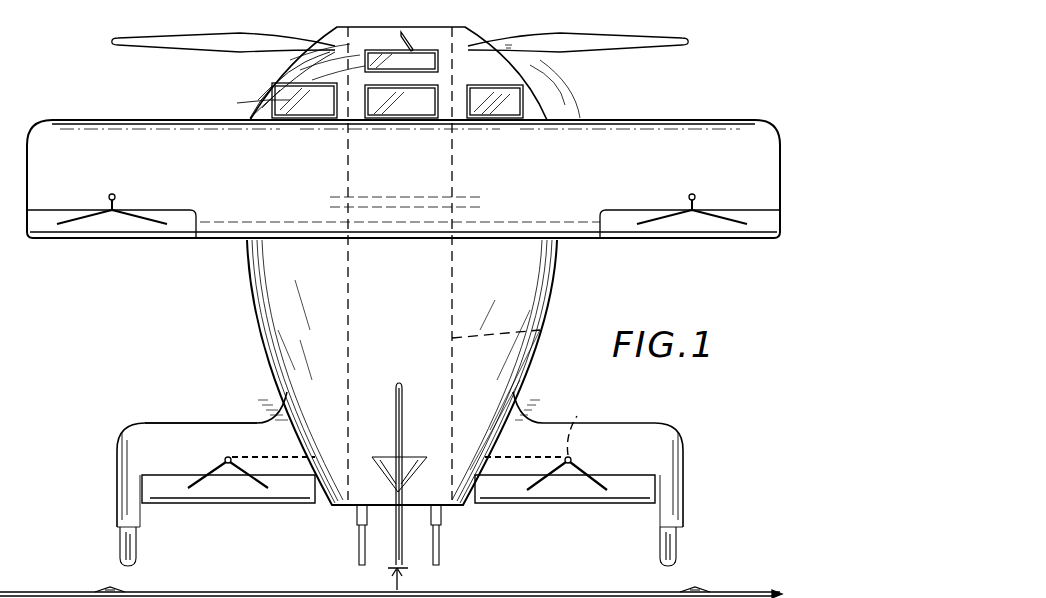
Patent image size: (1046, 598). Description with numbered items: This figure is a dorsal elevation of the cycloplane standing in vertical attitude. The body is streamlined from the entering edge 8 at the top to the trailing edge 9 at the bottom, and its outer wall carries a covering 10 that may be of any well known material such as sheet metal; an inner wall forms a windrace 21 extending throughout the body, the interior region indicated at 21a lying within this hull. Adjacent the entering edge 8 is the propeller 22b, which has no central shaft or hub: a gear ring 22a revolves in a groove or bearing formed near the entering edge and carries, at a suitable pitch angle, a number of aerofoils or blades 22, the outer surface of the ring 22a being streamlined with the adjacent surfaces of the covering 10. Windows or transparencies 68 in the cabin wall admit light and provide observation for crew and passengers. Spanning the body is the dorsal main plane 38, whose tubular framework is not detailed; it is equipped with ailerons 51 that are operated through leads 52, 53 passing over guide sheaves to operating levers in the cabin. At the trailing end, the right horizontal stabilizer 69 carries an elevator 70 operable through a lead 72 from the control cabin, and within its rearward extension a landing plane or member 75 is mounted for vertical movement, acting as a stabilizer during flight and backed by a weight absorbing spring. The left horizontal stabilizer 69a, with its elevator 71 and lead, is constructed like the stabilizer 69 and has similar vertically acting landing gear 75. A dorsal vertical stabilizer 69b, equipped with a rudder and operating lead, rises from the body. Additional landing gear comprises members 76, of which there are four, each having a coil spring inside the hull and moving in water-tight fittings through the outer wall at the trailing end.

The entering edge 8 is at (388, 33).
The trailing edge 9 is at (335, 508).
The covering 10 is at (561, 277).
The windrace 21 is at (540, 330).
The hull interior 21a is at (355, 298).
The aerofoils or blades 22 is at (173, 43).
The gear ring 22a is at (320, 55).
The propeller 22b is at (235, 65).
The dorsal plane 38 is at (680, 125).
The ailerons 51 is at (153, 238).
The lead 52 is at (80, 222).
The lead 53 is at (722, 226).
The windows or transparencies 68 is at (537, 108).
The right horizontal stabilizer 69 is at (668, 449).
The left horizontal stabilizer 69a is at (210, 423).
The dorsal vertical stabilizer 69b is at (403, 393).
The elevator 70 is at (583, 500).
The elevator 71 is at (232, 505).
The lead 72 is at (568, 426).
The landing plane or member 75 is at (403, 548).
The landing gear member 76 is at (441, 523).